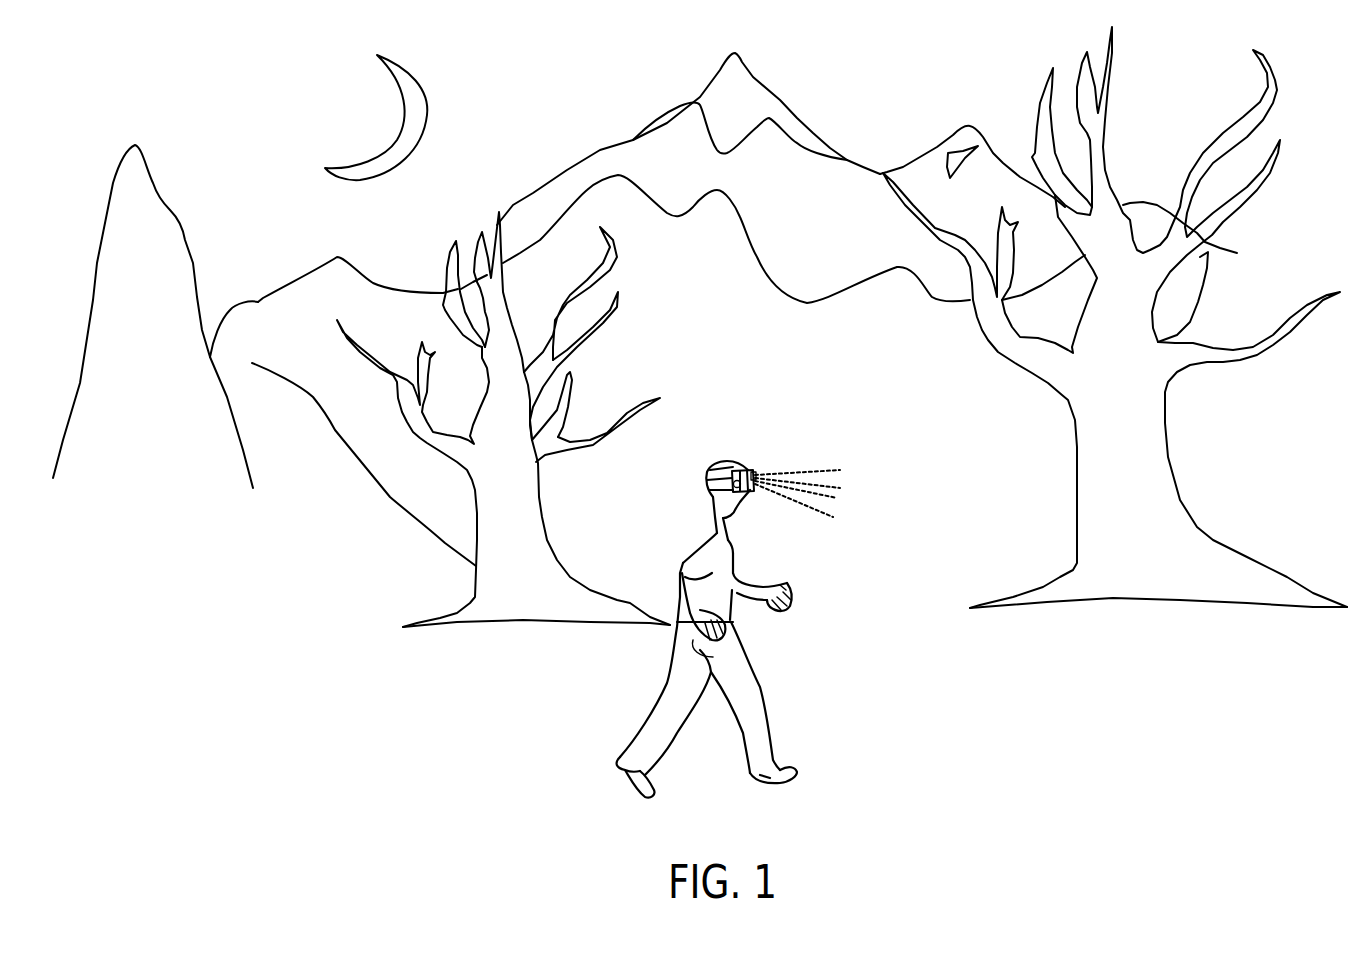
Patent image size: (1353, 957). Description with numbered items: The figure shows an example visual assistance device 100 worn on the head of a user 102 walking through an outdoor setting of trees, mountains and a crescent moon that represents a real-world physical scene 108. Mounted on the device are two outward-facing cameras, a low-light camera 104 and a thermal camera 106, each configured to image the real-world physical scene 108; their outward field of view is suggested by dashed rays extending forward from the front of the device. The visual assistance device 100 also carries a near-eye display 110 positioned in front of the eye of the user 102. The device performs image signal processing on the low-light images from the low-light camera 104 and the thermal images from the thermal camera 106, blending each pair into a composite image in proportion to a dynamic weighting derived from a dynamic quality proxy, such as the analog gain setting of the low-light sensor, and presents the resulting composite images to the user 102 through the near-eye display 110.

The visual assistance device 100 is at (707, 482).
The user 102 is at (697, 528).
The low-light camera 104 is at (740, 468).
The thermal camera 106 is at (753, 472).
The real-world physical scene 108 is at (952, 499).
The near-eye display 110 is at (748, 480).